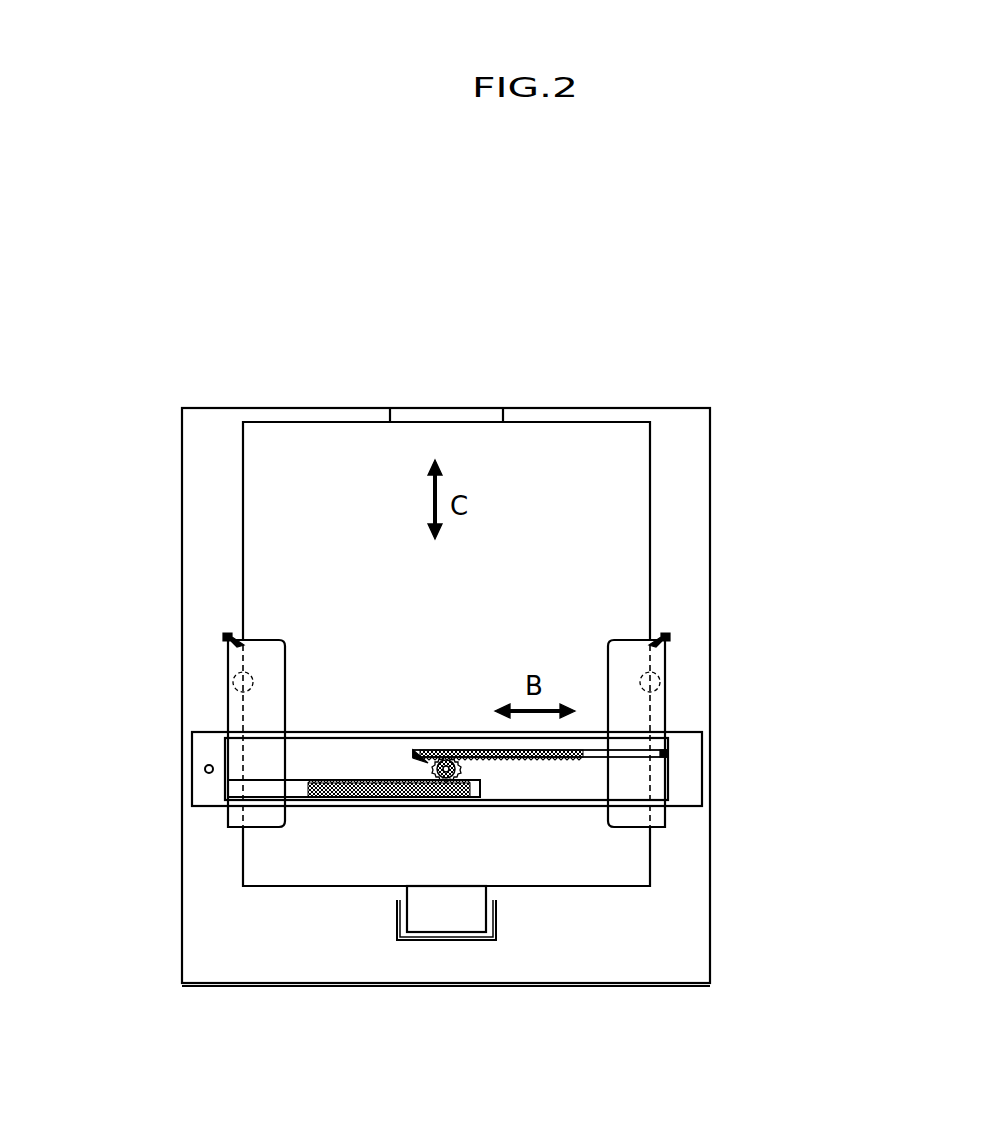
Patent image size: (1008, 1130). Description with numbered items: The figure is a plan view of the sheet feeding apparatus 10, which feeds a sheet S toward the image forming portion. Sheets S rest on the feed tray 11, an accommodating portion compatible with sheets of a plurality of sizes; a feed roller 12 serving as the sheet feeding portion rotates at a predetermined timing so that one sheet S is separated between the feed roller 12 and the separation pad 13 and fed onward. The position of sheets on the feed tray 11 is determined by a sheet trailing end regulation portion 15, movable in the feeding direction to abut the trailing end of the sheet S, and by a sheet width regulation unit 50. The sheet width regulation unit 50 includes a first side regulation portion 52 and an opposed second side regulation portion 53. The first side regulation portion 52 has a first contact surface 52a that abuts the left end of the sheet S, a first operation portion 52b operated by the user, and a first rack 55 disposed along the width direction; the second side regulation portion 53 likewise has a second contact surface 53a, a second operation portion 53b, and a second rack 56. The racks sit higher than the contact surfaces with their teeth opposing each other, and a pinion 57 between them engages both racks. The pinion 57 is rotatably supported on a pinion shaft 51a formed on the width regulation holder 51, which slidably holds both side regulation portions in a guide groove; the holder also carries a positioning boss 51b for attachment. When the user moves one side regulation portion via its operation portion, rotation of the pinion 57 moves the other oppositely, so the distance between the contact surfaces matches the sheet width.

The sheet feeding apparatus 10 is at (373, 348).
The feed tray 11 is at (682, 508).
The feed roller 12 is at (437, 922).
The separation pad 13 is at (395, 927).
The sheet trailing end regulation portion 15 is at (483, 413).
The sheet S is at (582, 448).
The sheet width regulation unit 50 is at (735, 772).
The width regulation holder 51 is at (195, 740).
The pinion shaft 51a is at (415, 750).
The positioning boss 51b is at (205, 769).
The first side regulation portion 52 is at (233, 815).
The first contact surface 52a is at (232, 690).
The first operation portion 52b is at (223, 637).
The second side regulation portion 53 is at (657, 725).
The second contact surface 53a is at (658, 690).
The second operation portion 53b is at (672, 637).
The first rack 55 is at (358, 778).
The second rack 56 is at (583, 757).
The pinion 57 is at (453, 776).